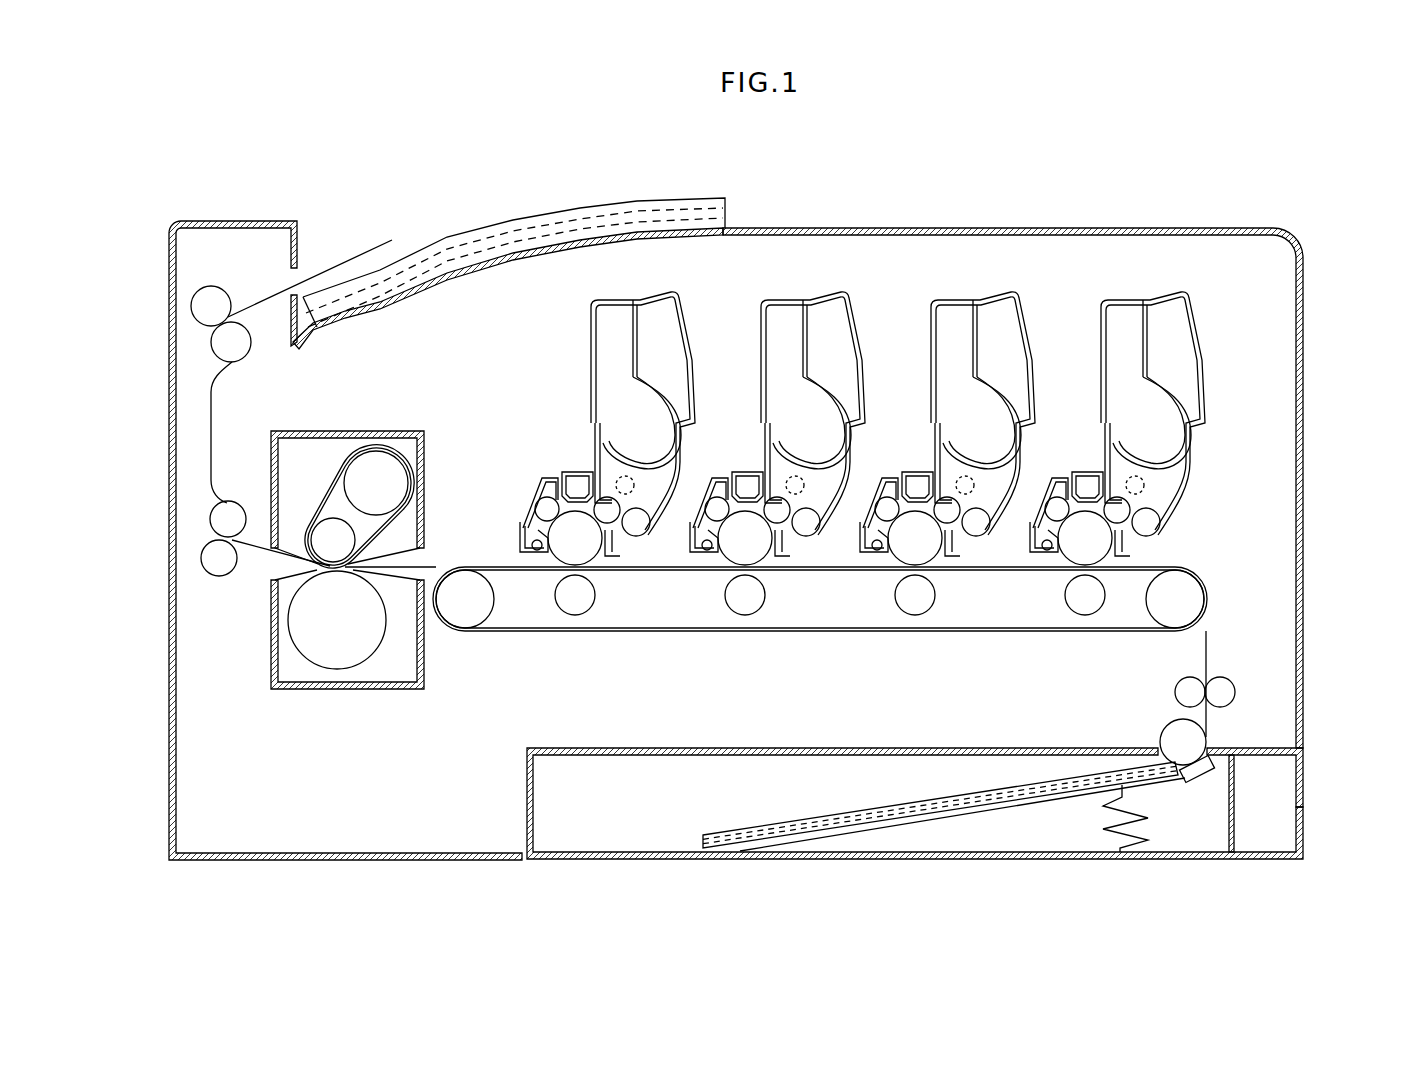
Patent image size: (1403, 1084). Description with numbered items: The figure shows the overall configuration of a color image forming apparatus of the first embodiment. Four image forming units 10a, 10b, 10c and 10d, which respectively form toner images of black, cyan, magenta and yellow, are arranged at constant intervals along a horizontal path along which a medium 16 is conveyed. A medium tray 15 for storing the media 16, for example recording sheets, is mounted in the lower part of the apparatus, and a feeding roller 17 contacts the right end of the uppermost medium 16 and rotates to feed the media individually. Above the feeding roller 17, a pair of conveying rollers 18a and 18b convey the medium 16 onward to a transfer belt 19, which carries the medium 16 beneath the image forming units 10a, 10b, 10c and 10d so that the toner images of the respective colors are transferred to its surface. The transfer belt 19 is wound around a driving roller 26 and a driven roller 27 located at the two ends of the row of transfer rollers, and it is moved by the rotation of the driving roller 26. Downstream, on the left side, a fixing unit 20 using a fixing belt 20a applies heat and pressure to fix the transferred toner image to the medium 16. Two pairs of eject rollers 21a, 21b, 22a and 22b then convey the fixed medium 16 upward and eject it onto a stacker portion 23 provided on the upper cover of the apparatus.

The image forming unit 10a is at (1153, 319).
The image forming unit 10b is at (983, 319).
The image forming unit 10c is at (813, 319).
The image forming unit 10d is at (625, 303).
The medium tray 15 is at (1197, 860).
The medium 16 is at (748, 832).
The feeding roller 17 is at (1208, 737).
The conveying roller 18a is at (1178, 698).
The conveying roller 18b is at (1235, 693).
The transfer belt 19 is at (1156, 568).
The fixing unit 20 is at (355, 692).
The fixing belt 20a is at (328, 500).
The eject roller 21a is at (222, 500).
The eject roller 21b is at (203, 560).
The eject roller 22a is at (192, 306).
The eject roller 22b is at (222, 385).
The stacker portion 23 is at (447, 270).
The driving roller 26 is at (465, 606).
The driven roller 27 is at (1180, 598).